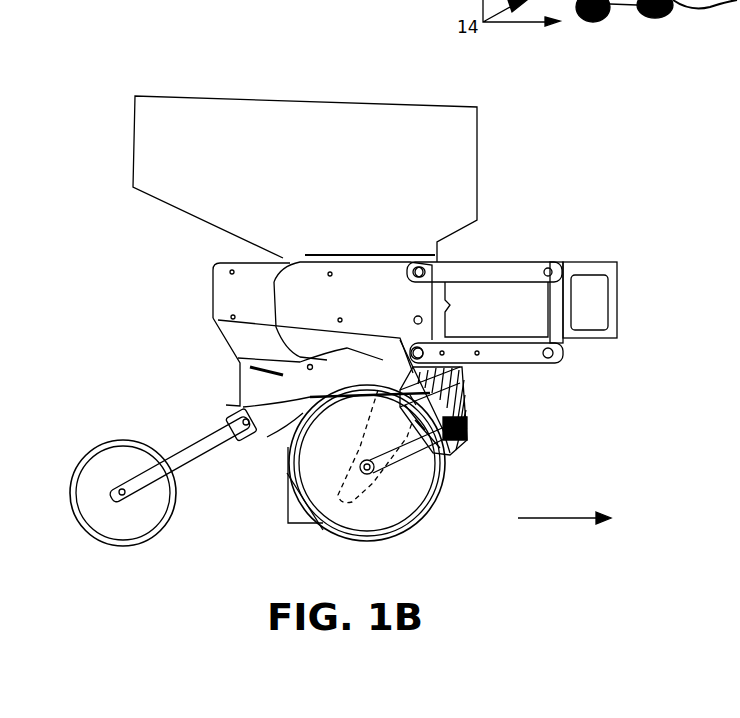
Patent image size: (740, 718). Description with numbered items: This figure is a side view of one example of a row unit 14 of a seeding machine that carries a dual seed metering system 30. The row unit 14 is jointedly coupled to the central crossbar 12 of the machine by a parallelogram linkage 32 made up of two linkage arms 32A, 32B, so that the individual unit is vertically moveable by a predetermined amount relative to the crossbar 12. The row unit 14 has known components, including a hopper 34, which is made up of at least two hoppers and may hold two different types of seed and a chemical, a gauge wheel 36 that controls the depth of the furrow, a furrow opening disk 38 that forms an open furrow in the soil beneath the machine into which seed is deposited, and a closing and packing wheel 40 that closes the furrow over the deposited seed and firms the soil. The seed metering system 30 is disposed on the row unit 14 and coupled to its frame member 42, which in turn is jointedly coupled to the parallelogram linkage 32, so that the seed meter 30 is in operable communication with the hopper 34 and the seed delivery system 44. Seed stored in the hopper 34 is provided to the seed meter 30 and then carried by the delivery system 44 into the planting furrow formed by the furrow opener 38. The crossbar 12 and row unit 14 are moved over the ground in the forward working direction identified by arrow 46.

The central crossbar 12 is at (574, 262).
The row unit 14 is at (162, 60).
The dual seed metering system 30 is at (277, 283).
The parallelogram linkage 32 is at (536, 230).
The linkage arm 32A is at (458, 262).
The linkage arm 32B is at (484, 365).
The hopper 34 is at (338, 98).
The gauge wheel 36 is at (287, 433).
The furrow opening disk 38 is at (437, 510).
The closing and packing wheel 40 is at (73, 477).
The frame member 42 is at (232, 296).
The seed delivery system 44 is at (352, 466).
The arrow 46 is at (574, 517).